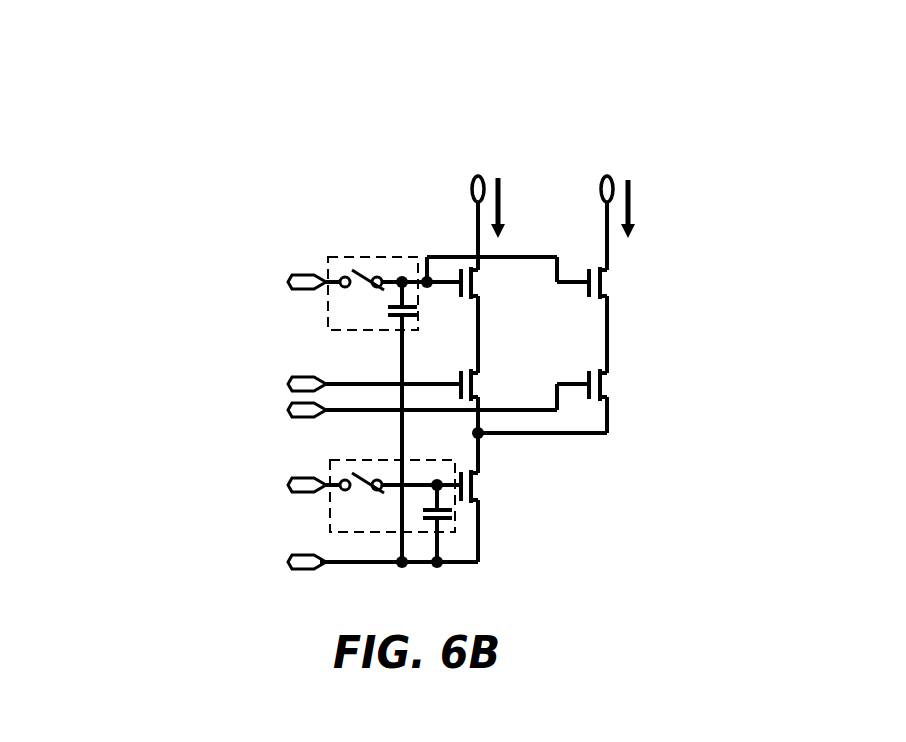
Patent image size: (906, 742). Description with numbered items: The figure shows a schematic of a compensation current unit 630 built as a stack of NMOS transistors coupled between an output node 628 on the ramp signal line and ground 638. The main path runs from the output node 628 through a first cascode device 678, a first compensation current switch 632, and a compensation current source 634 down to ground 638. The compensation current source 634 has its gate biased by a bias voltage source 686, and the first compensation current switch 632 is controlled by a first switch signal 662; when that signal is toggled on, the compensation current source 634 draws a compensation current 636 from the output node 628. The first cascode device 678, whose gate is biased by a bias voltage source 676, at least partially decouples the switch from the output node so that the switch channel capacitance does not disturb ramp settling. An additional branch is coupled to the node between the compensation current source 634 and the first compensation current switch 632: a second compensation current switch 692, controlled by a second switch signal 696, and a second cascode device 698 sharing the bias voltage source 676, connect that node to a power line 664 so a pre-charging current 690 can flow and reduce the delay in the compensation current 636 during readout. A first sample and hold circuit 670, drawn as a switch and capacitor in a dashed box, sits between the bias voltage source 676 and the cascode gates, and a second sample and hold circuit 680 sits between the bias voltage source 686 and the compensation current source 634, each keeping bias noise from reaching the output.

The compensation current unit 630 is at (115, 180).
The output node Vramp n 628 is at (421, 122).
The power line VDD 664 is at (590, 116).
The current Ic 636 is at (552, 217).
The pre-charging current Icb 690 is at (688, 222).
The first cascode device NCA 678 is at (566, 315).
The second cascode device NCB 698 is at (695, 284).
The first compensation current switch SWA 632 is at (566, 362).
The second compensation current switch SWB 692 is at (706, 389).
The compensation current source NB 634 is at (546, 491).
The bias voltage source VCN 676 is at (204, 279).
The first sample and hold circuit 670 is at (382, 257).
The first switch signal Ramp_en 662 is at (116, 384).
The second switch signal Swb_en 696 is at (116, 414).
The bias voltage source VBN 686 is at (206, 487).
The second sample and hold circuit 680 is at (378, 459).
The ground 638 is at (206, 564).